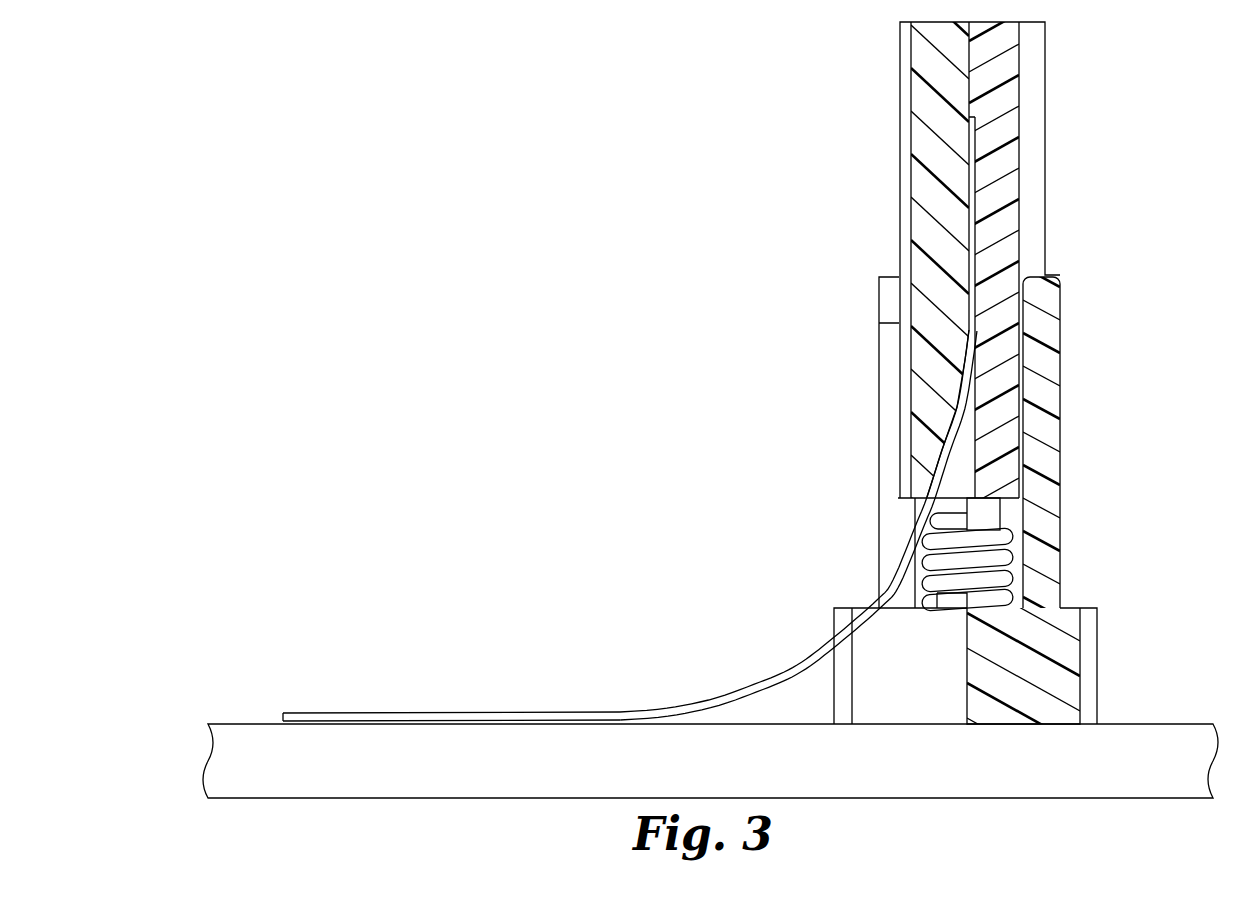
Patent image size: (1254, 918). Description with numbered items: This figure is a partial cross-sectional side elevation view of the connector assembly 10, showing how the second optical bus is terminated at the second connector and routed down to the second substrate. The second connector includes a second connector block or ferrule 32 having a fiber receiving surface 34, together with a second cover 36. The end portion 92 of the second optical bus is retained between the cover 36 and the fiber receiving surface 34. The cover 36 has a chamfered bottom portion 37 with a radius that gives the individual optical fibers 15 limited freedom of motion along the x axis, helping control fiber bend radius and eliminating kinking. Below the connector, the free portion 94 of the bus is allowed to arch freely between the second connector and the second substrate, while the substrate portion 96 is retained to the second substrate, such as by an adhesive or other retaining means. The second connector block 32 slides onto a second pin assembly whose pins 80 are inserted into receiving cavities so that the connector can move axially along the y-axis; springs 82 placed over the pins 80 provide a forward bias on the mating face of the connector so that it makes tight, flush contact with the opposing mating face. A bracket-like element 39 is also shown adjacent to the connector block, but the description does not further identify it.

The connector assembly 10 is at (608, 324).
The optical waveguides 15 is at (350, 712).
The second connector block 32 is at (1017, 133).
The fiber receiving surface 34 is at (975, 150).
The second cover 36 is at (917, 218).
The chamfered portion 37 is at (940, 448).
The bracket 39 is at (888, 303).
The pins 80 is at (988, 517).
The springs 82 is at (1005, 558).
The end portion 92 is at (972, 218).
The free portion 94 is at (797, 666).
The substrate portion 96 is at (500, 712).